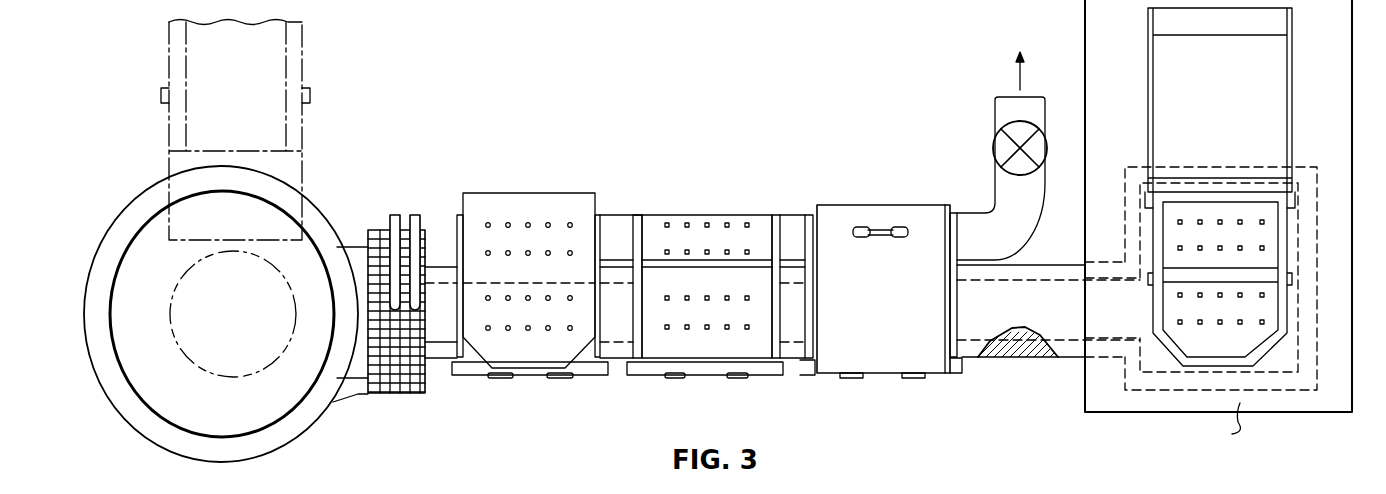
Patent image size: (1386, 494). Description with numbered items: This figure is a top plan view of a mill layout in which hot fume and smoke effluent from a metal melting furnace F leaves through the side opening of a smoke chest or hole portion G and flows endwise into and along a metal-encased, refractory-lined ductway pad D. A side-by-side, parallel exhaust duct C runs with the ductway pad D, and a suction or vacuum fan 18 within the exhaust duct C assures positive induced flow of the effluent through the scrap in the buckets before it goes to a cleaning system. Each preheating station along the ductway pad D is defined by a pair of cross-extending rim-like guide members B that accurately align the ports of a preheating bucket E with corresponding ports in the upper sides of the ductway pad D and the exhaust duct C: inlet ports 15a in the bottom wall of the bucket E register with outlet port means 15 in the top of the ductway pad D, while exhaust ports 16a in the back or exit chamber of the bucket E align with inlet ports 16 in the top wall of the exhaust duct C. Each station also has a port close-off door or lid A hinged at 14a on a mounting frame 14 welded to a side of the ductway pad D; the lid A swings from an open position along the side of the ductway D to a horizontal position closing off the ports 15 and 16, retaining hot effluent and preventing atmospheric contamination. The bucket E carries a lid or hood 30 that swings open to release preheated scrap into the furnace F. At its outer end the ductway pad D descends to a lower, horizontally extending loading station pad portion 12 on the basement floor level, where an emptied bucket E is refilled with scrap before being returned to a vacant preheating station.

The loading station pad portion 12 is at (1285, 388).
The mounting frame 14 is at (805, 365).
The hinge 14a is at (730, 378).
The outlet port means 15 is at (720, 331).
The inlet ports 15a is at (548, 332).
The inlet ports 16 is at (727, 221).
The exhaust ports 16a is at (548, 221).
The suction or vacuum fan 18 is at (993, 148).
The lid or hood 30 is at (1222, 117).
The port close-off door or lid A is at (890, 309).
The rim-like guide members B is at (457, 240).
The exhaust duct C is at (620, 214).
The ductway pad D is at (440, 358).
The preheating bucket E is at (240, 108).
The metal melting furnace F is at (239, 414).
The smoke chest or hole portion G is at (405, 395).